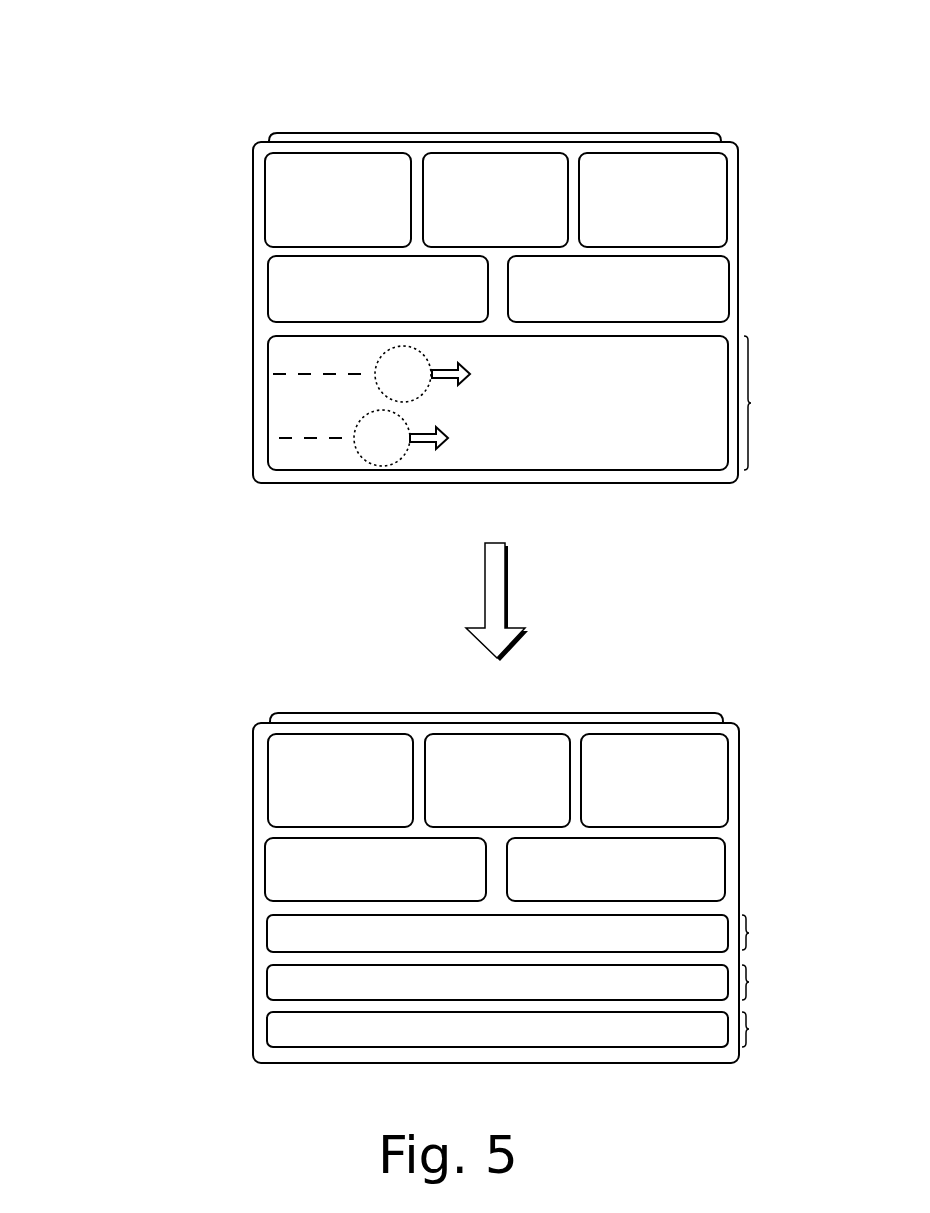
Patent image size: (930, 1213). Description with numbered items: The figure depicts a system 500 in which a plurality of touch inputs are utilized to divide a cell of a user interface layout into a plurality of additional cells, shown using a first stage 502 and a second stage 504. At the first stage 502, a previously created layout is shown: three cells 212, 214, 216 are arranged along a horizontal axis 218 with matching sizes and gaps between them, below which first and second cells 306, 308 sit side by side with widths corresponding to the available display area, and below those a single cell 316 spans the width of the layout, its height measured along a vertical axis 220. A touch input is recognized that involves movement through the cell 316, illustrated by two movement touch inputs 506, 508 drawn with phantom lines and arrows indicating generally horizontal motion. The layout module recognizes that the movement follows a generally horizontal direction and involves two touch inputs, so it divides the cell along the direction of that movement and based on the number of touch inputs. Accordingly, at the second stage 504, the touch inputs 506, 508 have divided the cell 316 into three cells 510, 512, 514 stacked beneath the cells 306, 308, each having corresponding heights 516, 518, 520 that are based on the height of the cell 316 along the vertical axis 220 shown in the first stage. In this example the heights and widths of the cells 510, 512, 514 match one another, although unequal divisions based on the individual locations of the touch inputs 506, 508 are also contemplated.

The system 500 is at (176, 80).
The first stage 502 is at (199, 293).
The second stage 504 is at (199, 851).
The horizontal axis 218 is at (495, 133).
The cell 212 is at (339, 490).
The cell 214 is at (496, 490).
The cell 216 is at (653, 490).
The first cell 306 is at (376, 578).
The second cell 308 is at (618, 578).
The single cell 316 is at (498, 403).
The movement touch input 506 is at (371, 374).
The movement touch input 508 is at (363, 438).
The vertical axis 220 is at (751, 403).
The cell 510 is at (497, 933).
The cell 512 is at (497, 982).
The cell 514 is at (497, 1029).
The height 516 is at (749, 933).
The height 518 is at (749, 982).
The height 520 is at (749, 1029).